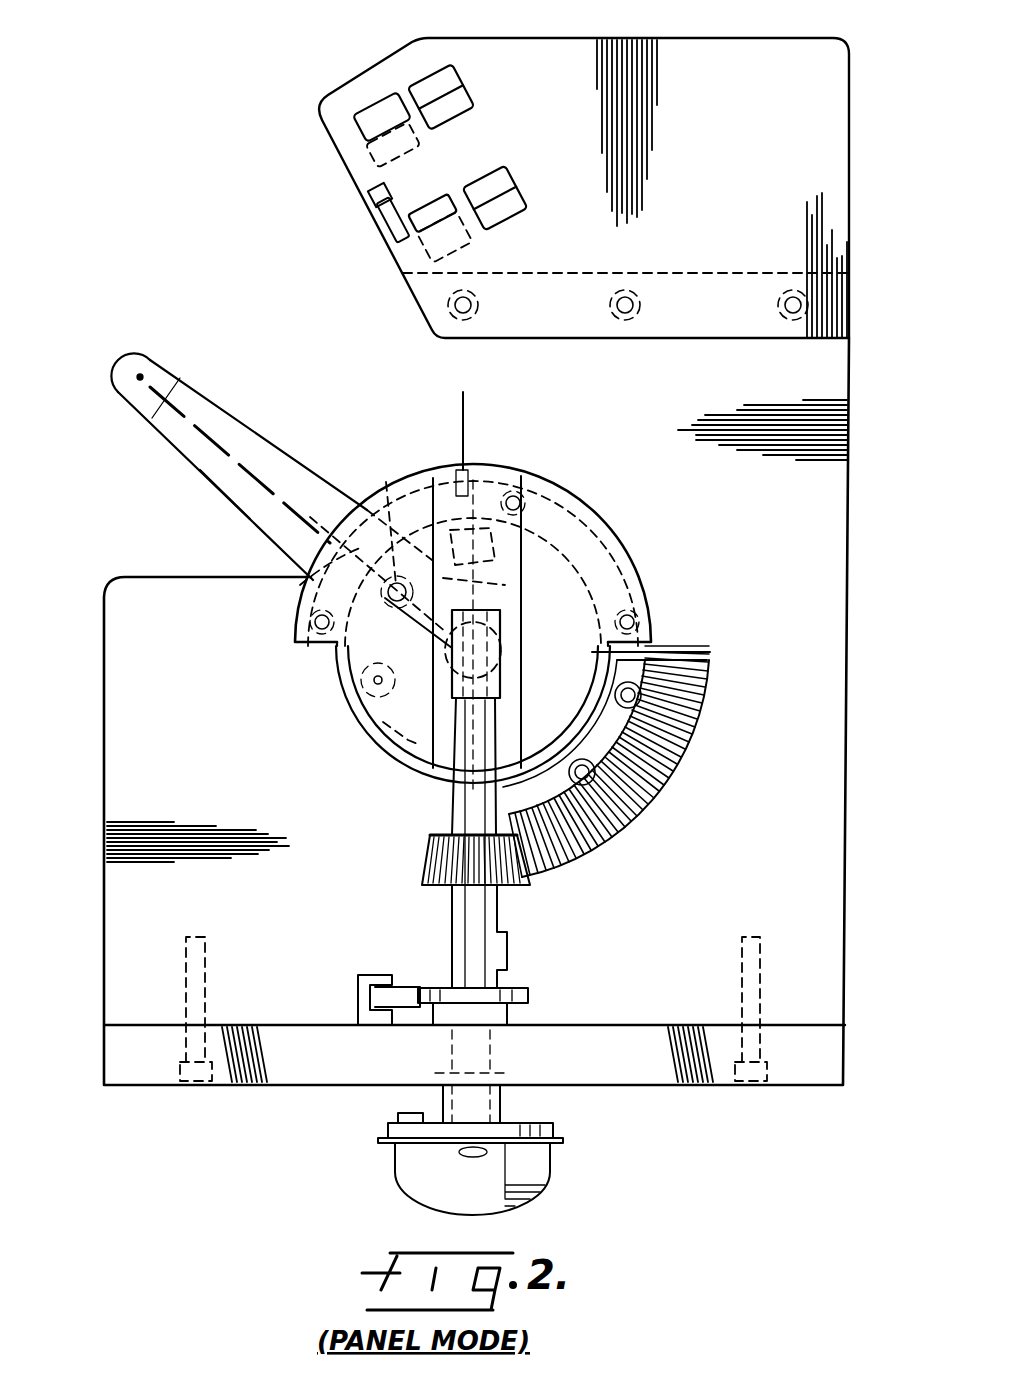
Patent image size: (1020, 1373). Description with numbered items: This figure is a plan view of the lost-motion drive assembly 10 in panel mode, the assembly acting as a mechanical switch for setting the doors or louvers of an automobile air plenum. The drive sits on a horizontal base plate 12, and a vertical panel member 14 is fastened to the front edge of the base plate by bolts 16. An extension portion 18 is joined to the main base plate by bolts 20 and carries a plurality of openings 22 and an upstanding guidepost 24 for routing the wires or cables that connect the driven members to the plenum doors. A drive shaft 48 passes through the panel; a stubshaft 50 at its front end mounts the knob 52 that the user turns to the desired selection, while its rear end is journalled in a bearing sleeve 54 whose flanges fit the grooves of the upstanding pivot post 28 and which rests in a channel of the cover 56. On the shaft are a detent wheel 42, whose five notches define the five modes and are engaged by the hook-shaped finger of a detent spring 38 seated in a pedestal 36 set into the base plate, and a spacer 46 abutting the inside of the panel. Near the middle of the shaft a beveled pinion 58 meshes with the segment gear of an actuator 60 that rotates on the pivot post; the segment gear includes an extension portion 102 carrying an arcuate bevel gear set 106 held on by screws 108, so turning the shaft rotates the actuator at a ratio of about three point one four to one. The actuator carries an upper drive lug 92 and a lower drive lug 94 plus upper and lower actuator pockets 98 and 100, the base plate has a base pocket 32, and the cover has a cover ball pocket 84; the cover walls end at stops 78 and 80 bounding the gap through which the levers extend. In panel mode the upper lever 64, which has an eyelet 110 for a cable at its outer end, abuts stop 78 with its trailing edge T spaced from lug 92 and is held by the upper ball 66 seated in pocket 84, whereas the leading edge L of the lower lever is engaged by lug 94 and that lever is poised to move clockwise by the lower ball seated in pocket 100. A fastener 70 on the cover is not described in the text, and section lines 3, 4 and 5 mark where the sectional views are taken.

The lost-motion drive assembly 10 is at (652, 1098).
The base plate 12 is at (848, 816).
The panel member 14 is at (836, 1054).
The bolts 16 is at (197, 1088).
The extension portion 18 is at (733, 50).
The bolts 20 is at (448, 312).
The openings 22 is at (430, 205).
The guidepost 24 is at (378, 213).
The pivot post 28 is at (520, 650).
The base pocket 32 is at (474, 590).
The pedestal 36 is at (362, 975).
The detent spring 38 is at (416, 975).
The detent wheel 42 is at (516, 988).
The spacer 46 is at (447, 1027).
The drive shaft 48 is at (451, 906).
The stubshaft 50 is at (503, 1108).
The knob 52 is at (552, 1184).
The bearing sleeve 54 is at (502, 618).
The cover 56 is at (648, 572).
The beveled pinion 58 is at (421, 869).
The actuator 60 is at (408, 785).
The upper lever 64 is at (203, 407).
The upper ball 66 is at (416, 616).
The screw 70 is at (520, 487).
The stop 78 is at (292, 565).
The stop 80 is at (470, 458).
The cover ball pocket 84 is at (309, 618).
The upper drive lug 92 is at (378, 758).
The lower drive lug 94 is at (483, 550).
The upper actuator pocket 98 is at (360, 690).
The lower actuator pocket 100 is at (368, 521).
The extension portion 102 is at (705, 656).
The arcuate bevel gear set 106 is at (640, 823).
The screws 108 is at (634, 690).
The eyelet 110 is at (134, 382).
The leading edge L is at (260, 432).
The trailing edge T is at (215, 496).
The section line 3 is at (555, 992).
The section line 4 is at (462, 580).
The section line 5 is at (128, 372).